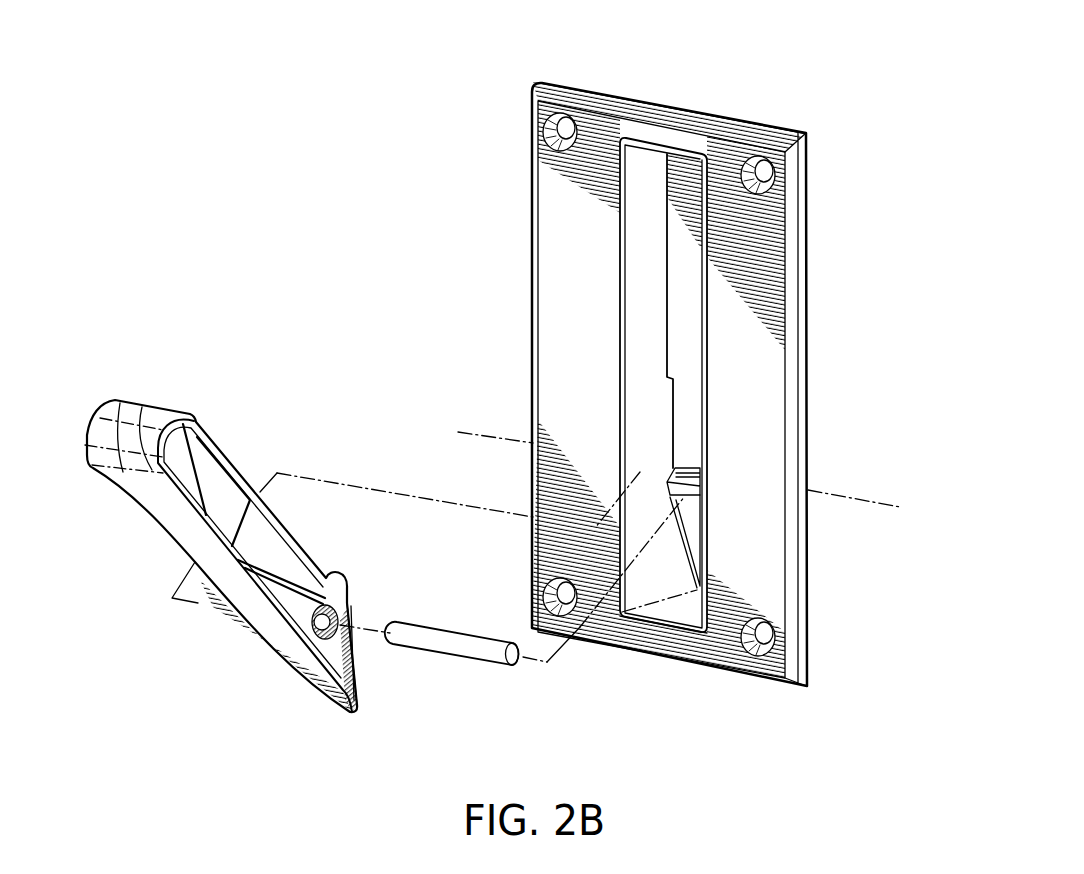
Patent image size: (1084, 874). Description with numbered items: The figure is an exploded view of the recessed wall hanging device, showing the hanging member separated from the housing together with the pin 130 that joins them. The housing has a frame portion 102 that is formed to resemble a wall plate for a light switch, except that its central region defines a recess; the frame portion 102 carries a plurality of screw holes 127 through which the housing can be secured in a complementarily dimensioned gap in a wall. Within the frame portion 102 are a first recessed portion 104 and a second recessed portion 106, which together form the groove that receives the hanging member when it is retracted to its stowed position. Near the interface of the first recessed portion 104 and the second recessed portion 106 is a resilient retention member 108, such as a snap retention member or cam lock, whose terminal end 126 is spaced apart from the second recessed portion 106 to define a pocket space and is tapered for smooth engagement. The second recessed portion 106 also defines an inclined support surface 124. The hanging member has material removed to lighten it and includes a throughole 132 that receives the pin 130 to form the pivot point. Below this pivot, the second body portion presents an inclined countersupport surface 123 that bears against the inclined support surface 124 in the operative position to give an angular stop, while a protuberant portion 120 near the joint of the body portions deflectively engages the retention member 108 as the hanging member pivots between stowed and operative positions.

The frame portion 102 is at (602, 128).
The screw holes 127 is at (556, 132).
The first recessed portion 104 is at (682, 262).
The retention member 108 is at (688, 430).
The terminal end 126 is at (693, 462).
The inclined support surface 124 is at (690, 513).
The second recessed portion 106 is at (677, 575).
The protuberant portion 120 is at (343, 590).
The throughole 132 is at (342, 610).
The countersupport surface 123 is at (357, 663).
The pin 130 is at (467, 660).